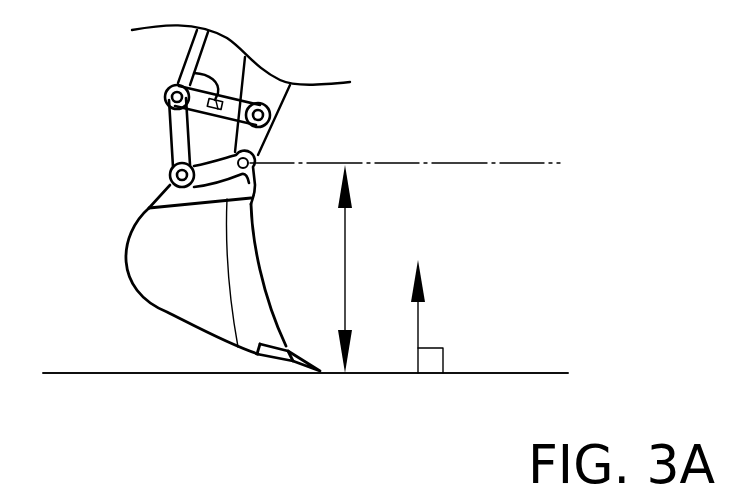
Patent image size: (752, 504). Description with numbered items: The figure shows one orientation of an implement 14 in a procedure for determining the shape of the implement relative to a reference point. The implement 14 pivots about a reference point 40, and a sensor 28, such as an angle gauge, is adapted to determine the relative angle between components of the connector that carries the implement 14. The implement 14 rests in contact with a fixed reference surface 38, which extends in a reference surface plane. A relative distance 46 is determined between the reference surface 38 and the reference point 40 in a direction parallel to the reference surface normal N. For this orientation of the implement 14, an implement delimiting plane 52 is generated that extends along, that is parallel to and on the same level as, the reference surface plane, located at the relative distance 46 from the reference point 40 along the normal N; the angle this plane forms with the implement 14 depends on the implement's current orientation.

The implement 14 is at (90, 286).
The sensor 28 is at (178, 72).
The reference surface 38 is at (63, 374).
The reference point 40 is at (257, 162).
The relative distance 46 is at (345, 270).
The implement delimiting plane 52 is at (125, 374).
The reference surface normal N is at (418, 330).